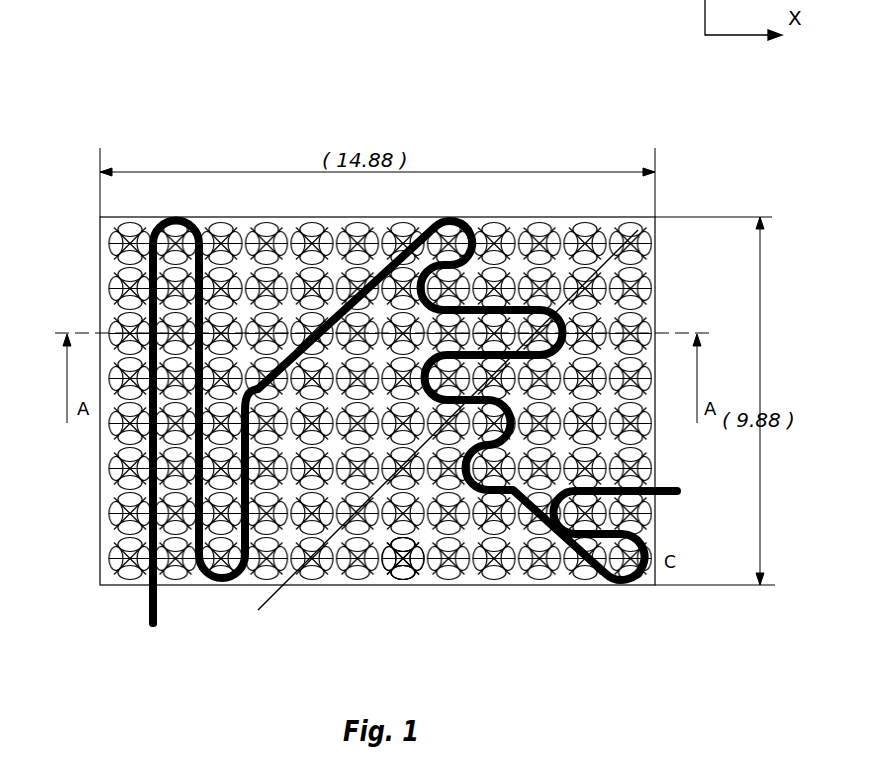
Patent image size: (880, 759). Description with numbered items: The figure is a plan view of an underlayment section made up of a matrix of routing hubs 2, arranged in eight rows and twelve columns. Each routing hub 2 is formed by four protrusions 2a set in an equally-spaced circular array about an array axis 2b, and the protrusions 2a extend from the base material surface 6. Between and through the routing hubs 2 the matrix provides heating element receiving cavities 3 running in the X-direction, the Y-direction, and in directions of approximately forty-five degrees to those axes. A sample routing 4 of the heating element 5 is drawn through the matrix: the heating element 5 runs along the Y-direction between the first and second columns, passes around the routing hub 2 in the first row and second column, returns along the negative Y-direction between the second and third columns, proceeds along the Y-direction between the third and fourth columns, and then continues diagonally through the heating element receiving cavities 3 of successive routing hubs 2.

The routing hub 2 is at (420, 572).
The protrusion 2a is at (402, 573).
The array axis 2b is at (400, 550).
The heating element receiving cavity 3 is at (508, 232).
The sample routing 4 is at (332, 310).
The heating element 5 is at (153, 624).
The base material surface 6 is at (448, 448).